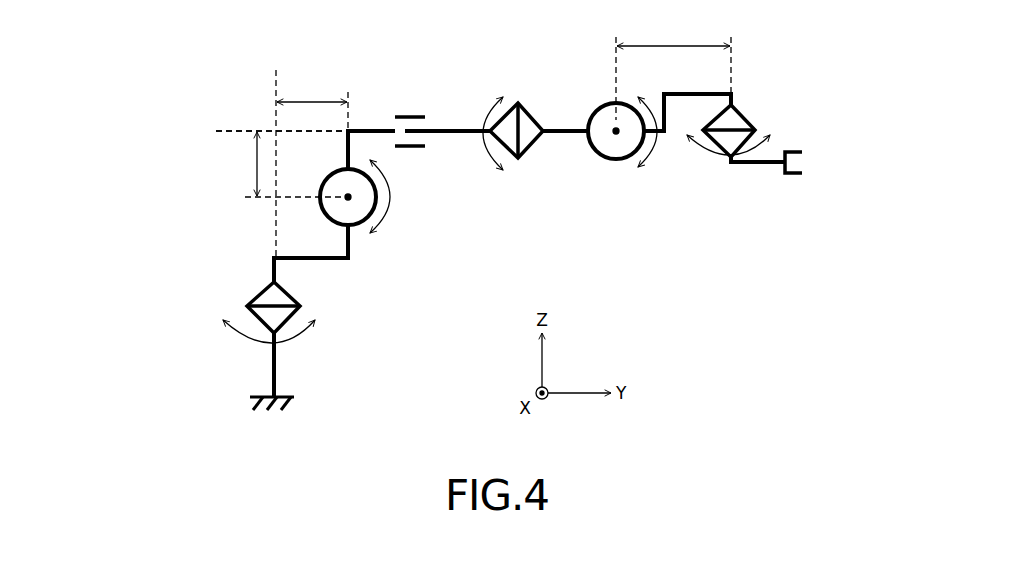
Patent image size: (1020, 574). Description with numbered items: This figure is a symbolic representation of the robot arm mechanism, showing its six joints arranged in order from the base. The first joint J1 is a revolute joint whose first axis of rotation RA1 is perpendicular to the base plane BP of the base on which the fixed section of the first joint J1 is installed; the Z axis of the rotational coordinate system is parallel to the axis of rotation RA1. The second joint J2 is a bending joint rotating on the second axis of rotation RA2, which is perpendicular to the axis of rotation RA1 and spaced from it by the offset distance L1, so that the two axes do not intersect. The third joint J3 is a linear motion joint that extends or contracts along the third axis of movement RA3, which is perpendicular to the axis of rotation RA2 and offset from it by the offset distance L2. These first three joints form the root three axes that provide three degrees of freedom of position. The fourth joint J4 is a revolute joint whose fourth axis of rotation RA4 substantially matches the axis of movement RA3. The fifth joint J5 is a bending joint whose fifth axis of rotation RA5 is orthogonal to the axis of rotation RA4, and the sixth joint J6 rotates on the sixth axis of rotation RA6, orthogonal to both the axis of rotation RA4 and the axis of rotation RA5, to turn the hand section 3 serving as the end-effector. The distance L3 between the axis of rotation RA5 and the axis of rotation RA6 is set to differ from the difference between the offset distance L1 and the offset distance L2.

The base plane BP is at (253, 371).
The first joint J1 is at (274, 312).
The second joint J2 is at (353, 205).
The third joint J3 is at (410, 117).
The fourth joint J4 is at (513, 136).
The fifth joint J5 is at (620, 140).
The sixth joint J6 is at (728, 125).
The first axis of rotation RA1 is at (275, 154).
The second axis of rotation RA2 is at (344, 197).
The third axis of movement RA3 is at (246, 131).
The fourth axis of rotation RA4 is at (264, 131).
The fifth axis of rotation RA5 is at (613, 130).
The sixth axis of rotation RA6 is at (732, 53).
The offset distance L1 is at (312, 106).
The offset distance L2 is at (242, 164).
The distance L3 is at (673, 34).
The hand section 3 is at (792, 174).